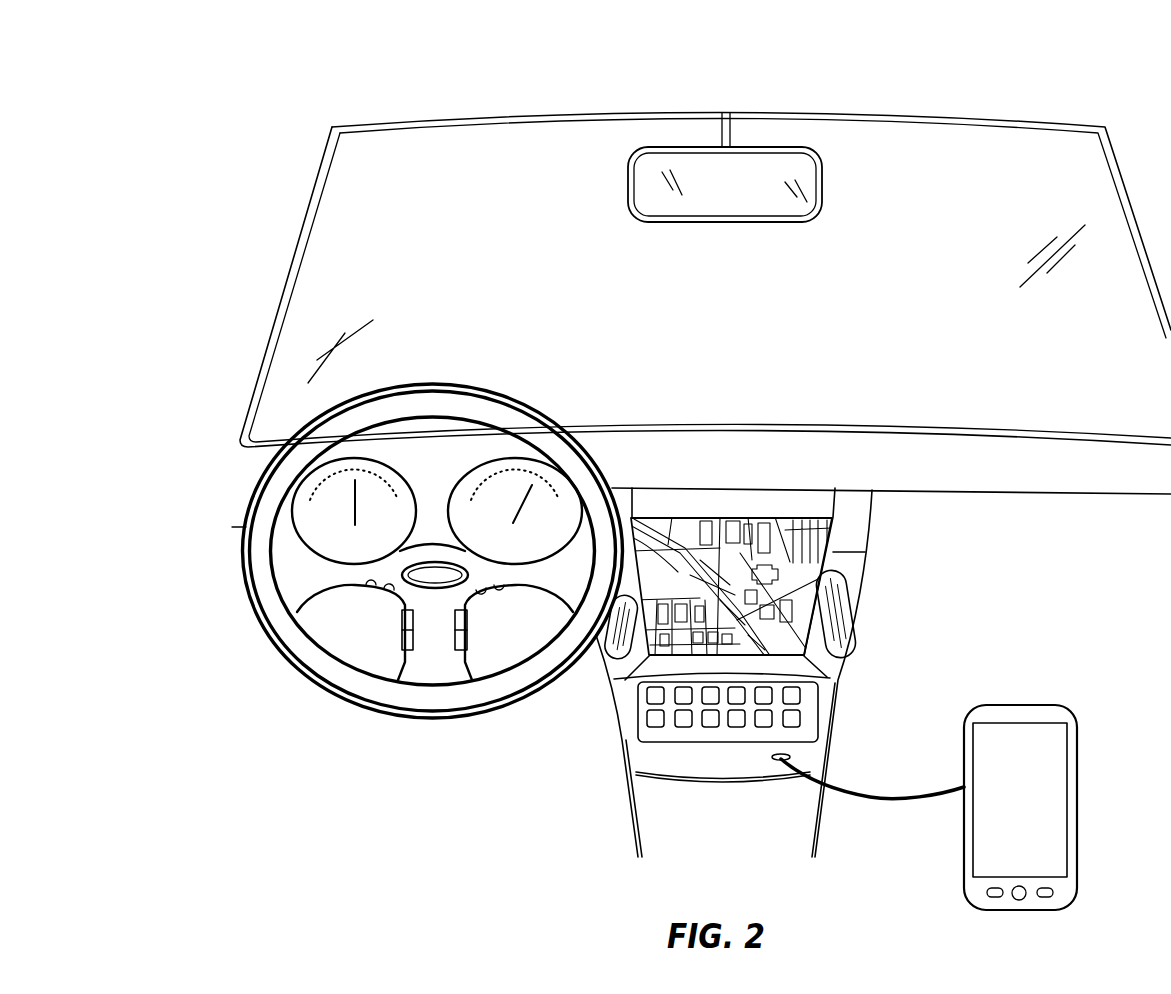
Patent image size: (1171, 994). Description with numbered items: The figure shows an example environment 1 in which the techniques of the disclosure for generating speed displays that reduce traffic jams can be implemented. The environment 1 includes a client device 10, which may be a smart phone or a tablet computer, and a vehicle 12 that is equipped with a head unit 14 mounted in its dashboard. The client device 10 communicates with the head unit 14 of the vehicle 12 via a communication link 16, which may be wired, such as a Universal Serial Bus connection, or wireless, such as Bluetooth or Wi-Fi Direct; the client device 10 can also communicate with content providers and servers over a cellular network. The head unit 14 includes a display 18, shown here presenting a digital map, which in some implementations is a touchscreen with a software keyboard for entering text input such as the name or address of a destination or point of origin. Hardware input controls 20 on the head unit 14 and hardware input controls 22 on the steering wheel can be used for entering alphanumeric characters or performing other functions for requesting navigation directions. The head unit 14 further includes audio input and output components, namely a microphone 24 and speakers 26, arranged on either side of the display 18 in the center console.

The environment 1 is at (441, 68).
The client device 10 is at (1024, 705).
The vehicle 12 is at (231, 412).
The head unit 14 is at (774, 477).
The communication link 16 is at (870, 784).
The display 18 is at (810, 543).
The hardware input controls 20 is at (646, 706).
The hardware input controls 22 is at (395, 642).
The microphone 24 is at (620, 658).
The speakers 26 is at (843, 615).